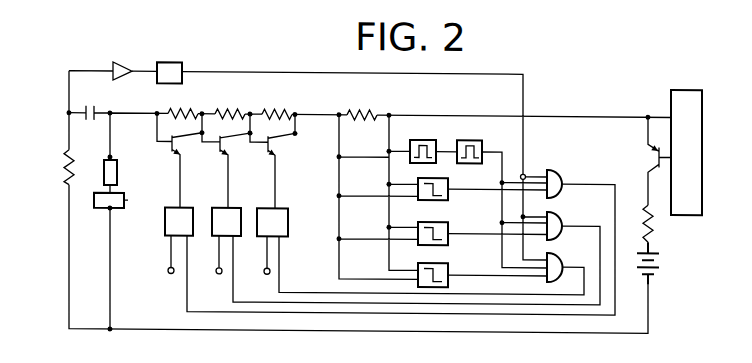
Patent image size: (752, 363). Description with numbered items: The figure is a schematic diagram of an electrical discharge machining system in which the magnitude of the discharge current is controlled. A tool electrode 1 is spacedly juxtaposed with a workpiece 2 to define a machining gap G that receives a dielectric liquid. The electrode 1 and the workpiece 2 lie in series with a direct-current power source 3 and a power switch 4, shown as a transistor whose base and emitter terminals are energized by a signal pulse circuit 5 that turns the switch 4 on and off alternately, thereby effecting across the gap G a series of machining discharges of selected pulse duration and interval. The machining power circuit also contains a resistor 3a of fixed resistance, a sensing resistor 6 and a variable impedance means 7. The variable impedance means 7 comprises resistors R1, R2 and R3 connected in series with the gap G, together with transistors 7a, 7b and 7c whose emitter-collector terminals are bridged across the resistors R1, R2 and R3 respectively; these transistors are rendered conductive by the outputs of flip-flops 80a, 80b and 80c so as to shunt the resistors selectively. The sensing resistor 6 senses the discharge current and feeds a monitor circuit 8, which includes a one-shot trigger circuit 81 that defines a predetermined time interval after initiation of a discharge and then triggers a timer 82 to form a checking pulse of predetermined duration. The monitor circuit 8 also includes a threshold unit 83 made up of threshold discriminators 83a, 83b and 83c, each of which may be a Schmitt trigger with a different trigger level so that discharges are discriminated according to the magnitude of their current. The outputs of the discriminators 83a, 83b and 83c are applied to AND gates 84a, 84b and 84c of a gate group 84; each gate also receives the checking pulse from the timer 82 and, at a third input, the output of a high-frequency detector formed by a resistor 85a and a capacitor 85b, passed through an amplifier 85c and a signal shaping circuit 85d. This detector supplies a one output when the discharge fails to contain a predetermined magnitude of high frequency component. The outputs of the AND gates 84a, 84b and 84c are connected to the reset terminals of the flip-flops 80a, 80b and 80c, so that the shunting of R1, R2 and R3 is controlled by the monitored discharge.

The tool electrode 1 is at (117, 165).
The workpiece 2 is at (111, 213).
The machining gap G is at (126, 193).
The direct-current power source 3 is at (656, 265).
The resistor 3a is at (635, 223).
The power switch 4 is at (650, 161).
The signal pulse circuit 5 is at (694, 168).
The sensing resistor 6 is at (362, 104).
The variable impedance means 7 is at (235, 160).
The transistor 7a is at (183, 160).
The transistor 7b is at (230, 170).
The transistor 7c is at (312, 166).
The monitor circuit 8 is at (235, 230).
The flip-flop 80a is at (196, 200).
The flip-flop 80b is at (244, 200).
The flip-flop 80c is at (290, 201).
The one-shot trigger circuit 81 is at (420, 140).
The timer 82 is at (467, 141).
The threshold unit 83 is at (460, 229).
The threshold discriminator 83a is at (441, 198).
The threshold discriminator 83b is at (441, 243).
The threshold discriminator 83c is at (445, 277).
The AND gates 84 is at (578, 214).
The AND gate 84a is at (553, 169).
The AND gate 84b is at (552, 209).
The AND gate 84c is at (552, 250).
The high-frequency detector resistor 85a is at (64, 168).
The capacitor 85b is at (91, 128).
The amplifier 85c is at (124, 58).
The signal shaping circuit 85d is at (178, 59).
The resistor R1 is at (183, 103).
The resistor R2 is at (230, 104).
The resistor R3 is at (277, 104).